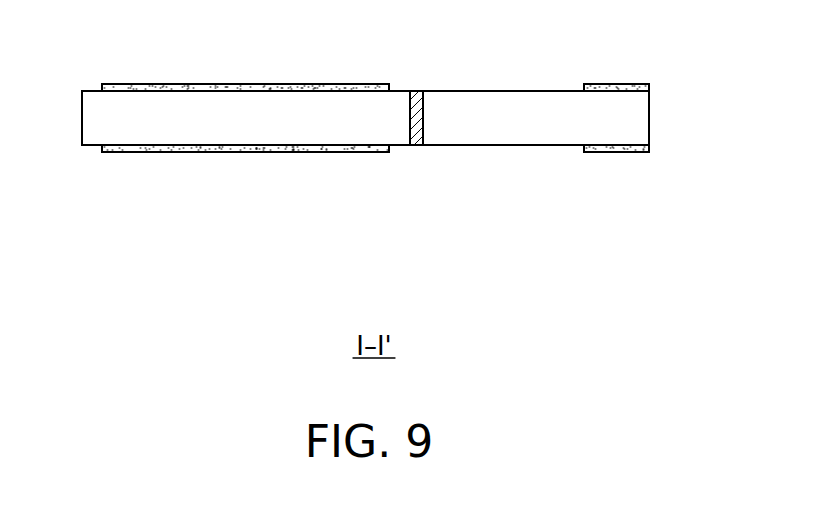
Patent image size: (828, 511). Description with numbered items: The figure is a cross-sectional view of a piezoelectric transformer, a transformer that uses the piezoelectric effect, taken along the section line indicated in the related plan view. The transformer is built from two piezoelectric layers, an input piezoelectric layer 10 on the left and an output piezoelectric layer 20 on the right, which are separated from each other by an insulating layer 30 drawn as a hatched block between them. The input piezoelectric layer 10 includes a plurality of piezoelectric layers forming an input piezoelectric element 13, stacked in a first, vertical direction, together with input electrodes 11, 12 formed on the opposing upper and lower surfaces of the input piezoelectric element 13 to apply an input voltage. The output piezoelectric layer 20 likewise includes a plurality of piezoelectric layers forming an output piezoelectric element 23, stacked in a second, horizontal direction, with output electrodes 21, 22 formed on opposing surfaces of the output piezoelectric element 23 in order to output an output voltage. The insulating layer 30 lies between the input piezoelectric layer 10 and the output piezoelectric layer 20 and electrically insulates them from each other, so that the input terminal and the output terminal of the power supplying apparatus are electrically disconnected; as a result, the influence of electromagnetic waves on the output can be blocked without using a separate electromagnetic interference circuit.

The input piezoelectric layer 10 is at (252, 246).
The input electrode 11 is at (160, 86).
The input electrode 12 is at (232, 153).
The input piezoelectric element 13 is at (275, 125).
The output piezoelectric layer 20 is at (528, 246).
The output electrode 21 is at (617, 86).
The output electrode 22 is at (632, 153).
The output piezoelectric element 23 is at (493, 125).
The insulating layer 30 is at (420, 90).